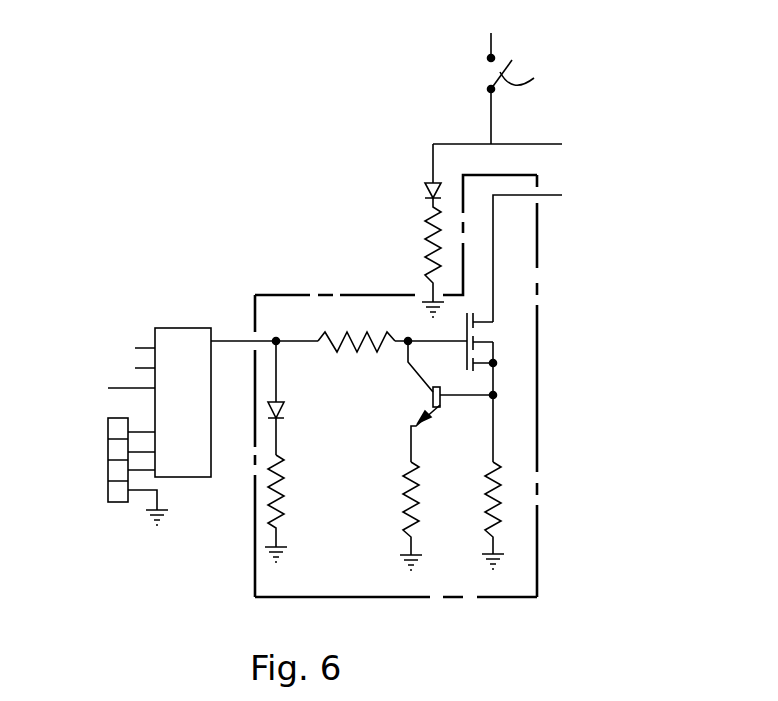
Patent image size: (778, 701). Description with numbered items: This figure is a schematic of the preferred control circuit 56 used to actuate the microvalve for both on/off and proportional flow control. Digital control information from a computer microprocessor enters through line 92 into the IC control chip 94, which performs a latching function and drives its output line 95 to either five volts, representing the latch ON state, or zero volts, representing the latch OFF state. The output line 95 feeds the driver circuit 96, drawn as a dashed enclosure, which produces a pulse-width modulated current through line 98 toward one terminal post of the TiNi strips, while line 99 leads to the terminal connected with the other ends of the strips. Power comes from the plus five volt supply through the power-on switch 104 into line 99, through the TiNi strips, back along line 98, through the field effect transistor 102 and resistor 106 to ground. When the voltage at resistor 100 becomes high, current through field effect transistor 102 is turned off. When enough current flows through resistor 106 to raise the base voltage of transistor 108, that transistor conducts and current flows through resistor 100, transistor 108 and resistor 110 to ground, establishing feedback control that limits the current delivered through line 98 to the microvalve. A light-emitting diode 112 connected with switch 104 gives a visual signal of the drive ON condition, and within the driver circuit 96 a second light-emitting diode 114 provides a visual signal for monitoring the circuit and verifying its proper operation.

The control circuit 56 is at (275, 184).
The line 92 is at (118, 388).
The IC control chip 94 is at (163, 326).
The output line 95 is at (226, 339).
The driver circuit 96 is at (561, 411).
The line 98 is at (558, 195).
The line 99 is at (552, 144).
The resistor 100 is at (335, 350).
The field effect transistor 102 is at (468, 371).
The power-on switch 104 is at (528, 77).
The resistor 106 is at (492, 521).
The transistor 108 is at (440, 410).
The resistor 110 is at (411, 500).
The light-emitting diode 112 is at (427, 190).
The light-emitting diode 114 is at (285, 414).